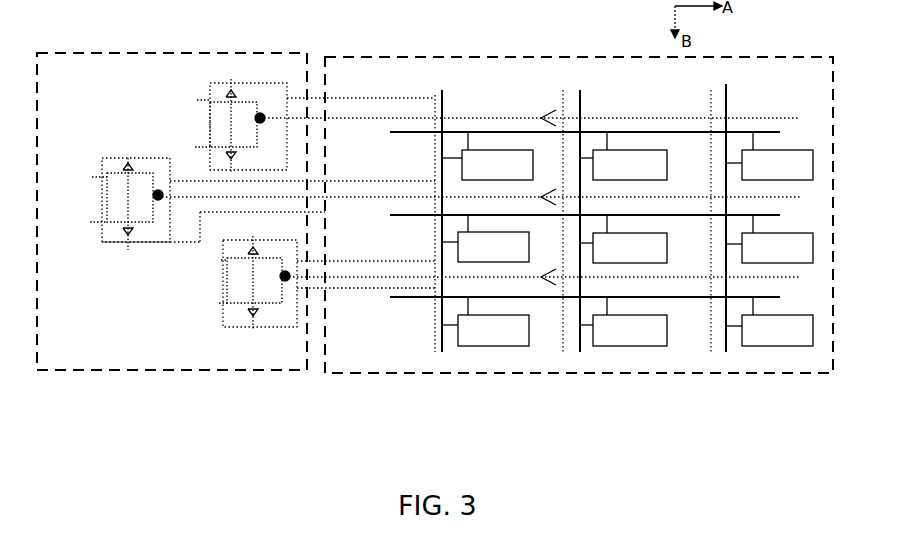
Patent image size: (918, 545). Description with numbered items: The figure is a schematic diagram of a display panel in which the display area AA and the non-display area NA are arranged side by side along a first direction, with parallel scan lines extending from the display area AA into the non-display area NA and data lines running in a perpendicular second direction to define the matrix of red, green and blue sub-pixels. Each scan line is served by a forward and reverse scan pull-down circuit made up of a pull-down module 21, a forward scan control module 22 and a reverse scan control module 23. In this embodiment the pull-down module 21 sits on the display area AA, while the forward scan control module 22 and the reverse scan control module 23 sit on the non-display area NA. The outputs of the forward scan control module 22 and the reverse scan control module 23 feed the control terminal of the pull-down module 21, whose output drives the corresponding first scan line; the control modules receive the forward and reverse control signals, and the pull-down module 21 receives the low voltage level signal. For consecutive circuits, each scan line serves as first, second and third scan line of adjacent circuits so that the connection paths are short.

The non-display area NA is at (202, 52).
The display area AA is at (445, 55).
The pull-down module 21 is at (510, 196).
The forward scan control module 22 is at (112, 240).
The reverse scan control module 23 is at (112, 173).